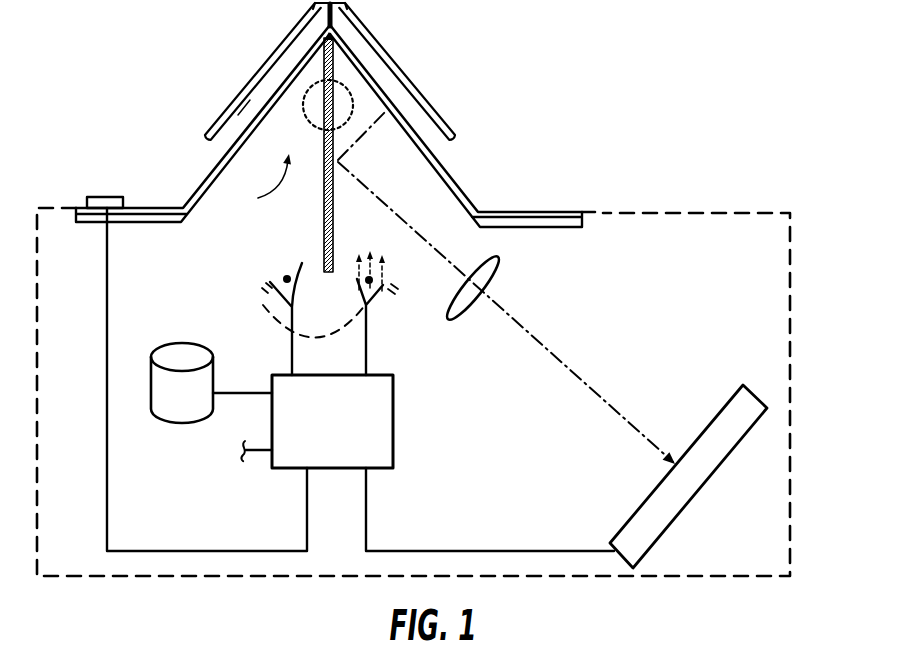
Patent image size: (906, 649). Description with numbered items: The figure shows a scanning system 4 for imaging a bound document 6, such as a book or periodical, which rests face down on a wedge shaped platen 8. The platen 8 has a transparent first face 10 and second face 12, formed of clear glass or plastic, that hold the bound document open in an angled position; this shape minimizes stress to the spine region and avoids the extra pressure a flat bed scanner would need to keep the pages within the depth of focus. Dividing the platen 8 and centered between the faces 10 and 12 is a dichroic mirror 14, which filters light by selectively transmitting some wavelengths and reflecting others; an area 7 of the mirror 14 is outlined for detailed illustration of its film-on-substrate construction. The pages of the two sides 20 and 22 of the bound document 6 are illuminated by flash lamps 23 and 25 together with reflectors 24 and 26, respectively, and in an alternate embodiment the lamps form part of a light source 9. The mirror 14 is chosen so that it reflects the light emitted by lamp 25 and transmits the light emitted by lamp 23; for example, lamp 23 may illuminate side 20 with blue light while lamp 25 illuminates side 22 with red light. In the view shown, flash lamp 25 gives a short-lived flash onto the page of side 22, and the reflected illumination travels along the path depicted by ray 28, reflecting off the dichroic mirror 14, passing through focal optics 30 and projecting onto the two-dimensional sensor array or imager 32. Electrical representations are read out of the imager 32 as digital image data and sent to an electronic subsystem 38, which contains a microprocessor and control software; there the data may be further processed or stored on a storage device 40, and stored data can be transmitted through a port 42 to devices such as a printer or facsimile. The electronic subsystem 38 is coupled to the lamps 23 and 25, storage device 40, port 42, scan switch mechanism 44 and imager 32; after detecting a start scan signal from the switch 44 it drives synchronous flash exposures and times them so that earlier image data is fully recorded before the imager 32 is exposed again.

The scanning system 4 is at (684, 211).
The bound document 6 is at (335, 113).
The area of dichroic mirror 7 is at (312, 84).
The wedge shaped platen 8 is at (265, 183).
The light source 9 is at (346, 340).
The first face 10 is at (209, 172).
The second face 12 is at (447, 167).
The dichroic mirror 14 is at (323, 204).
The side of bound document 20 is at (252, 95).
The side of bound document 22 is at (405, 100).
The flash lamp 23 is at (285, 276).
The reflector 24 is at (276, 297).
The flash lamp 25 is at (356, 300).
The reflector 26 is at (379, 294).
The ray 28 is at (580, 378).
The focal optics 30 is at (497, 278).
The imager 32 is at (688, 503).
The electronic subsystem 38 is at (395, 440).
The storage device 40 is at (184, 343).
The port 42 is at (237, 453).
The scan switch mechanism 44 is at (107, 195).